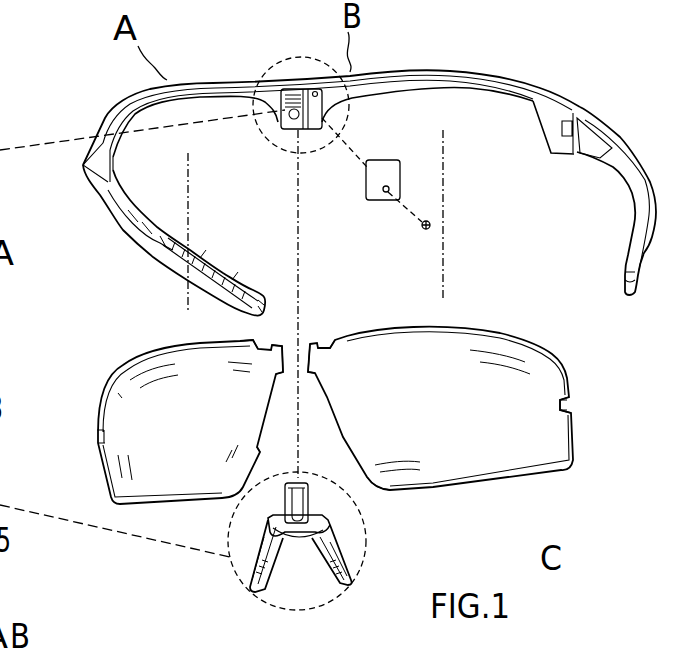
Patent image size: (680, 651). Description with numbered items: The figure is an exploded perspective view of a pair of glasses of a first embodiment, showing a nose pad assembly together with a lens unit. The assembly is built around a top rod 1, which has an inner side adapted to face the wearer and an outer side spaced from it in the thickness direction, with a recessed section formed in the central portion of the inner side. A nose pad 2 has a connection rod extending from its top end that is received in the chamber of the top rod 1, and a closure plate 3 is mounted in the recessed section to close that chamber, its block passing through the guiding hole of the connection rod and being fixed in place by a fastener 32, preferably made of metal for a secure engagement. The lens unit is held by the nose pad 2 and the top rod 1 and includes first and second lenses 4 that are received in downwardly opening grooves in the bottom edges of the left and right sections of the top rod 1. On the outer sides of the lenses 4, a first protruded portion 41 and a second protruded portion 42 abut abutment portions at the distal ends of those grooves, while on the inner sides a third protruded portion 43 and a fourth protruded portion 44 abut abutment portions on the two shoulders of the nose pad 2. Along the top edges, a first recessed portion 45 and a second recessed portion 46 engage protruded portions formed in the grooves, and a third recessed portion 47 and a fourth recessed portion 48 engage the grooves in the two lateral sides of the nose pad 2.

The top rod 1 is at (113, 104).
The nose pad 2 is at (362, 543).
The closure plate 3 is at (366, 185).
The fastener 32 is at (420, 223).
The first and second lenses 4 is at (573, 360).
The first protruded portion 41 is at (97, 432).
The second protruded portion 42 is at (574, 408).
The third protruded portion 43 is at (288, 362).
The fourth protruded portion 44 is at (307, 363).
The first recessed portion 45 is at (265, 350).
The second recessed portion 46 is at (332, 347).
The third recessed portion 47 is at (258, 448).
The fourth recessed portion 48 is at (365, 505).